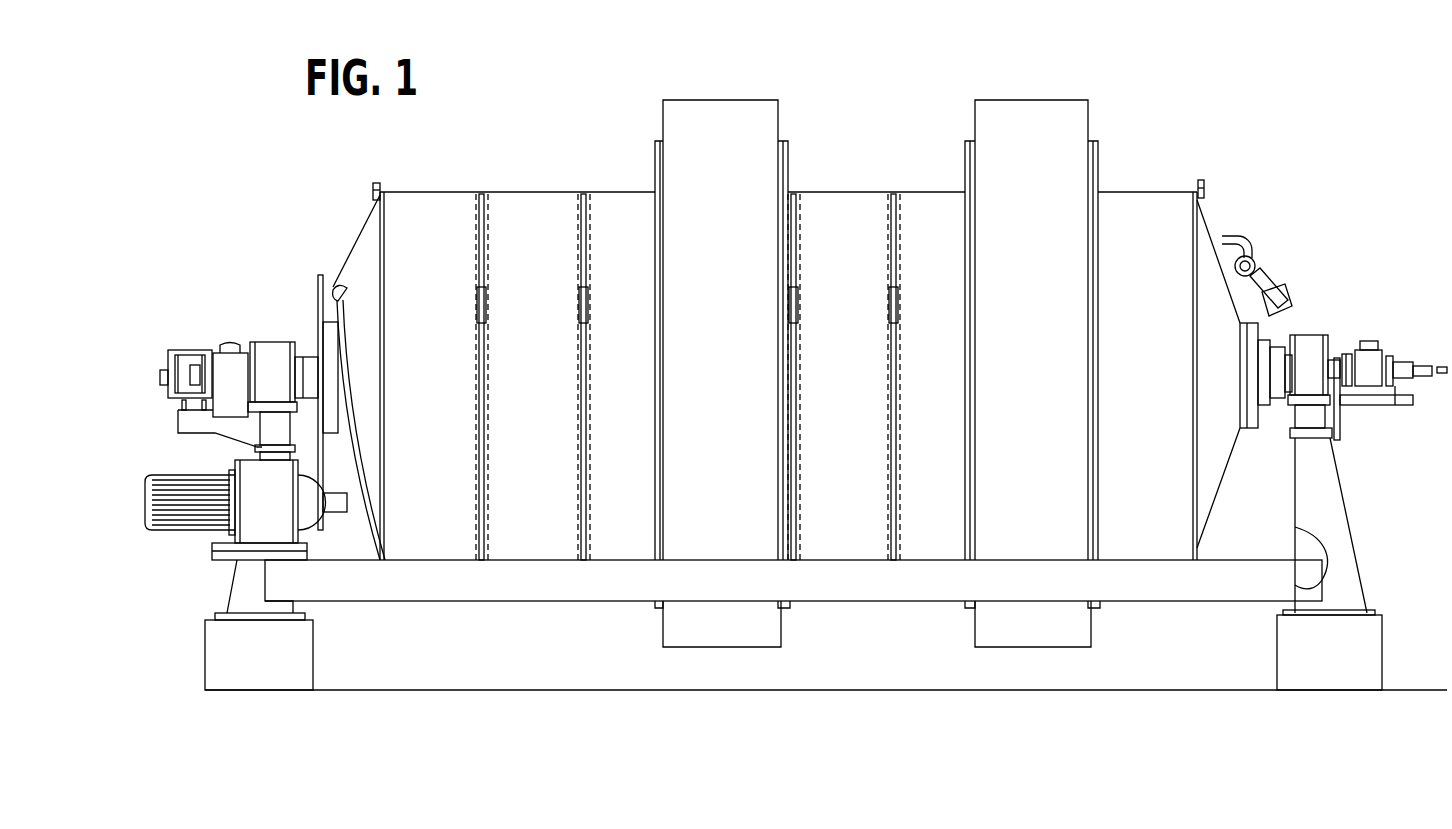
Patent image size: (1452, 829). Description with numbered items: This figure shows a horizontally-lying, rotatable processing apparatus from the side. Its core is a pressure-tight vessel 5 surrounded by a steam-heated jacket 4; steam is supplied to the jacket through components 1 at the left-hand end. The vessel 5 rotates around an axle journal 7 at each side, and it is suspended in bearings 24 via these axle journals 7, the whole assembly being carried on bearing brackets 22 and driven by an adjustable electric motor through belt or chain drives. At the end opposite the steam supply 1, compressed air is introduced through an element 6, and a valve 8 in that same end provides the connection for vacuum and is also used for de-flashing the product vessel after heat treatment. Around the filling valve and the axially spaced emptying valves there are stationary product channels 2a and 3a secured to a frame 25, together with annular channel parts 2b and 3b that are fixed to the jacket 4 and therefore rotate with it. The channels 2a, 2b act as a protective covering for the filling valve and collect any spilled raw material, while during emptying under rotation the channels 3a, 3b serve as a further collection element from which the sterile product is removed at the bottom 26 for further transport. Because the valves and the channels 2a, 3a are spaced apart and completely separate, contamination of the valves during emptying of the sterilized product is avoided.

The steam supply components 1 is at (172, 388).
The stationary product channel 2a is at (714, 100).
The annular channel part 2b is at (791, 160).
The stationary product channel 3a is at (1024, 100).
The annular channel part 3b is at (1101, 160).
The steam-heated jacket 4 is at (421, 192).
The pressure-tight vessel 5 is at (531, 192).
The compressed air element 6 is at (1425, 367).
The axle journal 7 is at (306, 356).
The valve 8 is at (1262, 292).
The bearing bracket 22 is at (232, 605).
The bearing 24 is at (272, 342).
The frame 25 is at (523, 587).
The bottom 26 is at (1040, 650).